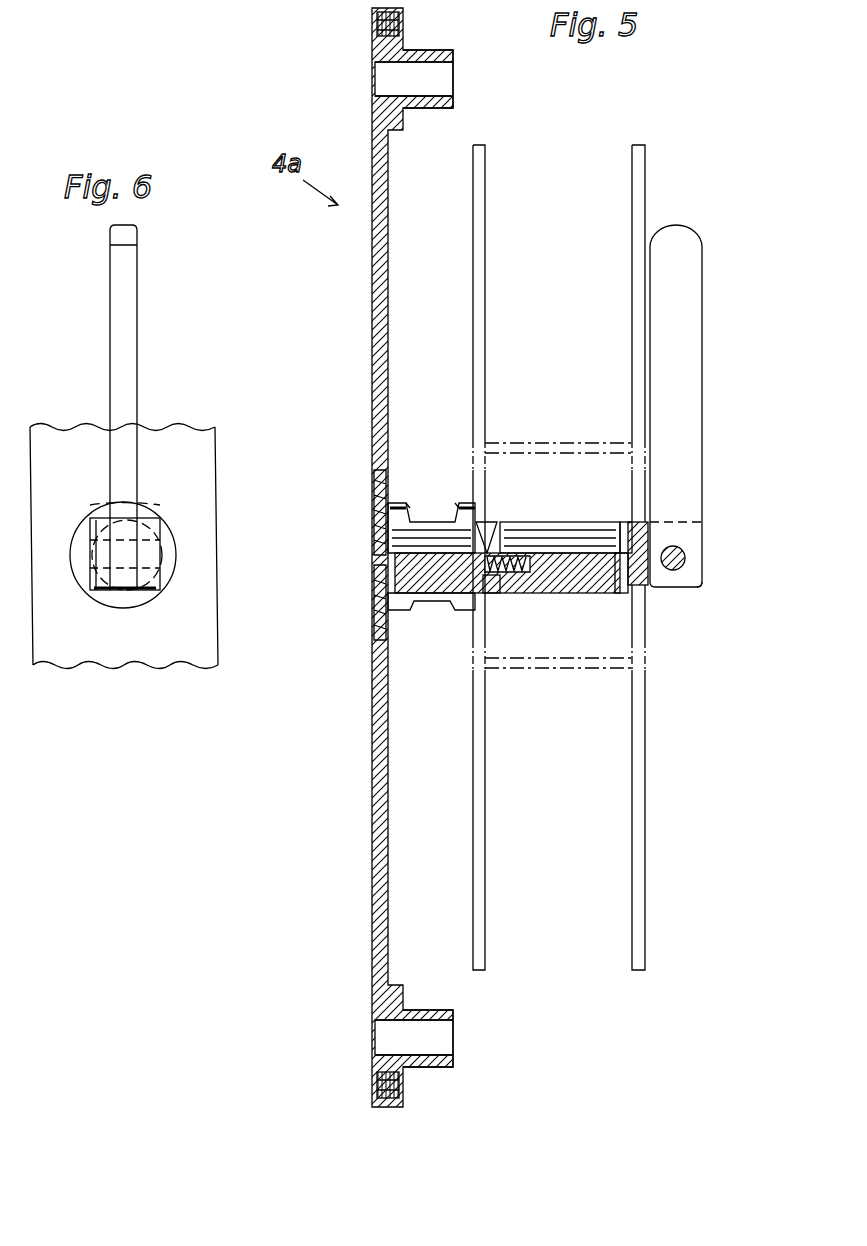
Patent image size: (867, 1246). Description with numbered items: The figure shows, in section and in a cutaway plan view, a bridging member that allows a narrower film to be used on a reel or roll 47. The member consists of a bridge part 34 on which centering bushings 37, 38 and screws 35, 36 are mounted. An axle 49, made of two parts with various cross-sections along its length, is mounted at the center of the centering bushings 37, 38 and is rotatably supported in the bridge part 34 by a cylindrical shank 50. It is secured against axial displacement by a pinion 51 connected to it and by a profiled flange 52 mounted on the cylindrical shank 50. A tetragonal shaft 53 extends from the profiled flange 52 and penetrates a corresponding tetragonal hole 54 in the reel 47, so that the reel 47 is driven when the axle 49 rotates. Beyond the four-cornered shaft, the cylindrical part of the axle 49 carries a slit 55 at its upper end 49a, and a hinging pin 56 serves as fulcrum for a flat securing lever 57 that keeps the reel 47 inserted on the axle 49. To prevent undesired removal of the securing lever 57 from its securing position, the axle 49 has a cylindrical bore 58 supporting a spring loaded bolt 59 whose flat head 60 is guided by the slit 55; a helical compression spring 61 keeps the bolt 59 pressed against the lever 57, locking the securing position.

In FIG. 5, the bridge part 34 is at (378, 390).
In FIG. 6, the bridge part 34 is at (183, 445).
In FIG. 5, the screw 35 is at (376, 1085).
In FIG. 5, the screw 36 is at (376, 26).
In FIG. 5, the centering bushing 37 is at (445, 1067).
In FIG. 5, the centering bushing 38 is at (450, 62).
In FIG. 5, the reel or roll 47 is at (633, 150).
In FIG. 5, the axle 49 is at (573, 586).
In FIG. 6, the axle 49 is at (115, 500).
In FIG. 5, the upper end of axle 49a is at (699, 586).
In FIG. 6, the upper end of axle 49a is at (160, 588).
In FIG. 5, the cylindrical shank 50 is at (372, 595).
In FIG. 5, the pinion 51 is at (372, 510).
In FIG. 5, the profiled flange 52 is at (432, 521).
In FIG. 6, the profiled flange 52 is at (128, 598).
In FIG. 5, the tetragonal shaft 53 is at (484, 548).
In FIG. 6, the tetragonal shaft 53 is at (96, 592).
In FIG. 5, the tetragonal hole 54 is at (470, 602).
In FIG. 5, the slit 55 is at (628, 586).
In FIG. 6, the slit 55 is at (150, 528).
In FIG. 5, the hinging pin 56 is at (686, 558).
In FIG. 6, the hinging pin 56 is at (160, 552).
In FIG. 5, the securing lever 57 is at (676, 248).
In FIG. 6, the securing lever 57 is at (125, 334).
In FIG. 5, the cylindrical bore 58 is at (512, 574).
In FIG. 5, the spring loaded bolt 59 is at (600, 576).
In FIG. 5, the flat head 60 is at (627, 528).
In FIG. 5, the compression spring 61 is at (498, 588).